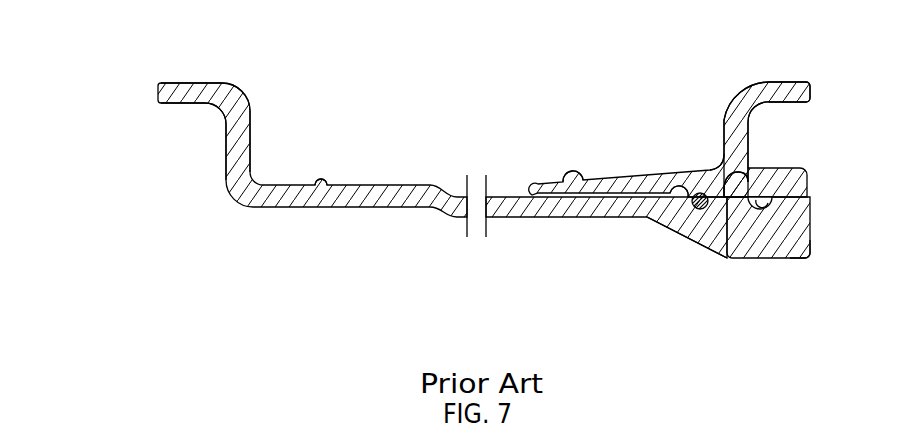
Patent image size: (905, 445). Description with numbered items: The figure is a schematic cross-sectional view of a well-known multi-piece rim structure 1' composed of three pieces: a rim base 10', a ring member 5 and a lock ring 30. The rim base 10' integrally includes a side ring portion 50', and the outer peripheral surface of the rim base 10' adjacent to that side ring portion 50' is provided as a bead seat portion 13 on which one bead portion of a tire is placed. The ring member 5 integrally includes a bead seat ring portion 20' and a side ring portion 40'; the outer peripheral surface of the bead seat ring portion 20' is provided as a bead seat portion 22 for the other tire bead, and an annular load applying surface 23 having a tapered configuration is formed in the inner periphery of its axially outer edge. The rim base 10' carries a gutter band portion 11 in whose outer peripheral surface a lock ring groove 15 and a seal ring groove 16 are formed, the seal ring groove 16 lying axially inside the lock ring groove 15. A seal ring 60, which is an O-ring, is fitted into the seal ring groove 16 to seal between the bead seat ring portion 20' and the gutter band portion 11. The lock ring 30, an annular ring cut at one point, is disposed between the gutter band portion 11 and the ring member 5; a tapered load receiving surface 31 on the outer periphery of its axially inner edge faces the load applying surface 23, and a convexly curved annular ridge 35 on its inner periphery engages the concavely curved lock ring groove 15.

The multi-piece rim structure 1' is at (497, 146).
The ring member 5 is at (718, 114).
The rim base 10' is at (442, 167).
The gutter band portion 11 is at (693, 232).
The bead seat portion 13 is at (323, 186).
The lock ring groove 15 is at (763, 216).
The seal ring groove 16 is at (680, 188).
The bead seat ring portion 20' is at (669, 134).
The bead seat portion 22 is at (572, 176).
The load applying surface 23 is at (752, 176).
The lock ring 30 is at (804, 162).
The load receiving surface 31 is at (728, 258).
The ridge 35 is at (768, 200).
The side ring portion 40' is at (767, 113).
The side ring portion 50' is at (220, 104).
The seal ring 60 is at (702, 208).